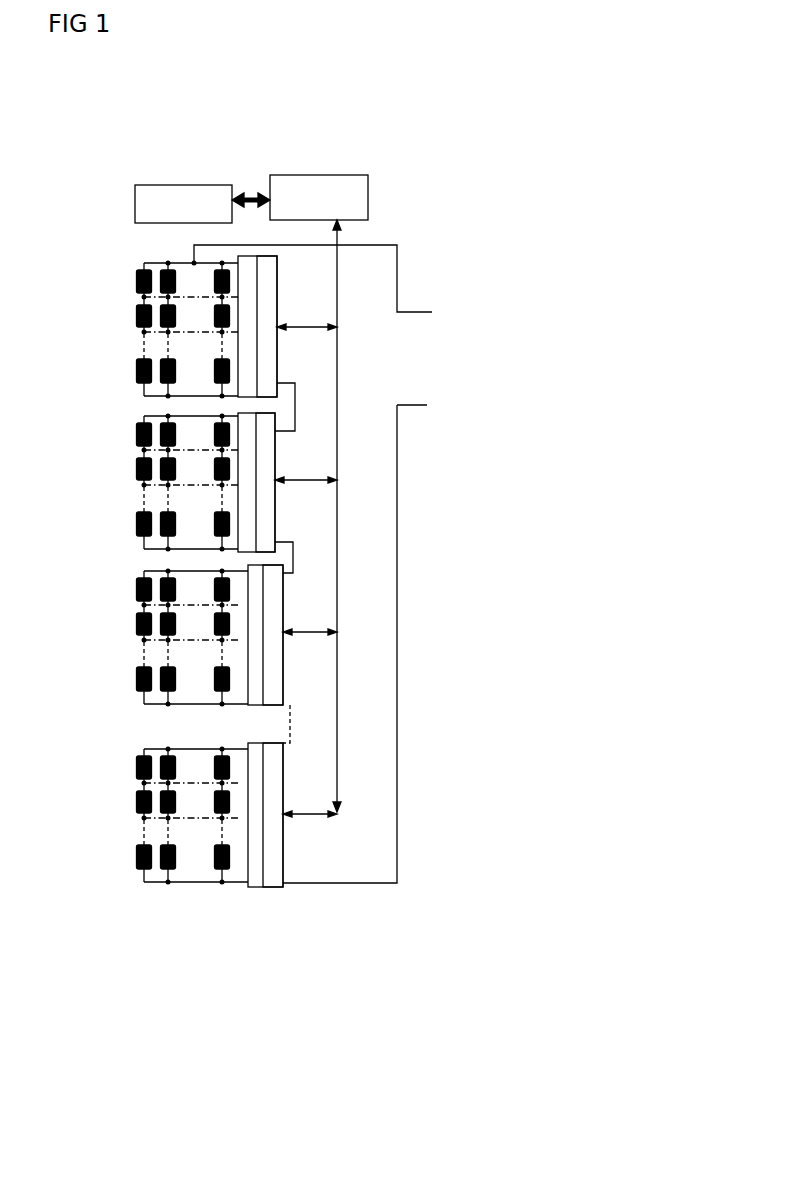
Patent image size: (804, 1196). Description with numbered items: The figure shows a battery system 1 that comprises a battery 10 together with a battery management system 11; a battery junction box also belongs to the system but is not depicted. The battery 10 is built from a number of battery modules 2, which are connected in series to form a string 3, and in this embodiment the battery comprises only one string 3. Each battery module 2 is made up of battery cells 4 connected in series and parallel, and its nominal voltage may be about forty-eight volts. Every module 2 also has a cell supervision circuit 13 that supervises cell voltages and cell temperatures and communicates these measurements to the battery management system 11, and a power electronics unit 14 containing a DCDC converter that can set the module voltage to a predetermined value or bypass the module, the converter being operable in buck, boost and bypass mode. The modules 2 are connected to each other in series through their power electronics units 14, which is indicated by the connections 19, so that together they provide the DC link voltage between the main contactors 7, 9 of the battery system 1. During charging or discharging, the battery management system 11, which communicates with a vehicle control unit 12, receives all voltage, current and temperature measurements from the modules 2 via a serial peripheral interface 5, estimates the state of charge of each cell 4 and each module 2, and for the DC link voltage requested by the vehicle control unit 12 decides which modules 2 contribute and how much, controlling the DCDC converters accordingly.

The battery system 1 is at (420, 160).
The battery module 2 is at (155, 573).
The string 3 is at (197, 890).
The battery cell 4 is at (137, 280).
The serial peripheral interface 5 is at (337, 748).
The main contactor 7 is at (415, 405).
The main contactor 9 is at (412, 312).
The battery 10 is at (218, 977).
The battery management system 11 is at (290, 175).
The vehicle control unit 12 is at (168, 185).
The cell supervision circuit 13 is at (250, 357).
The power electronics unit 14 is at (270, 290).
The connection 19 is at (295, 400).